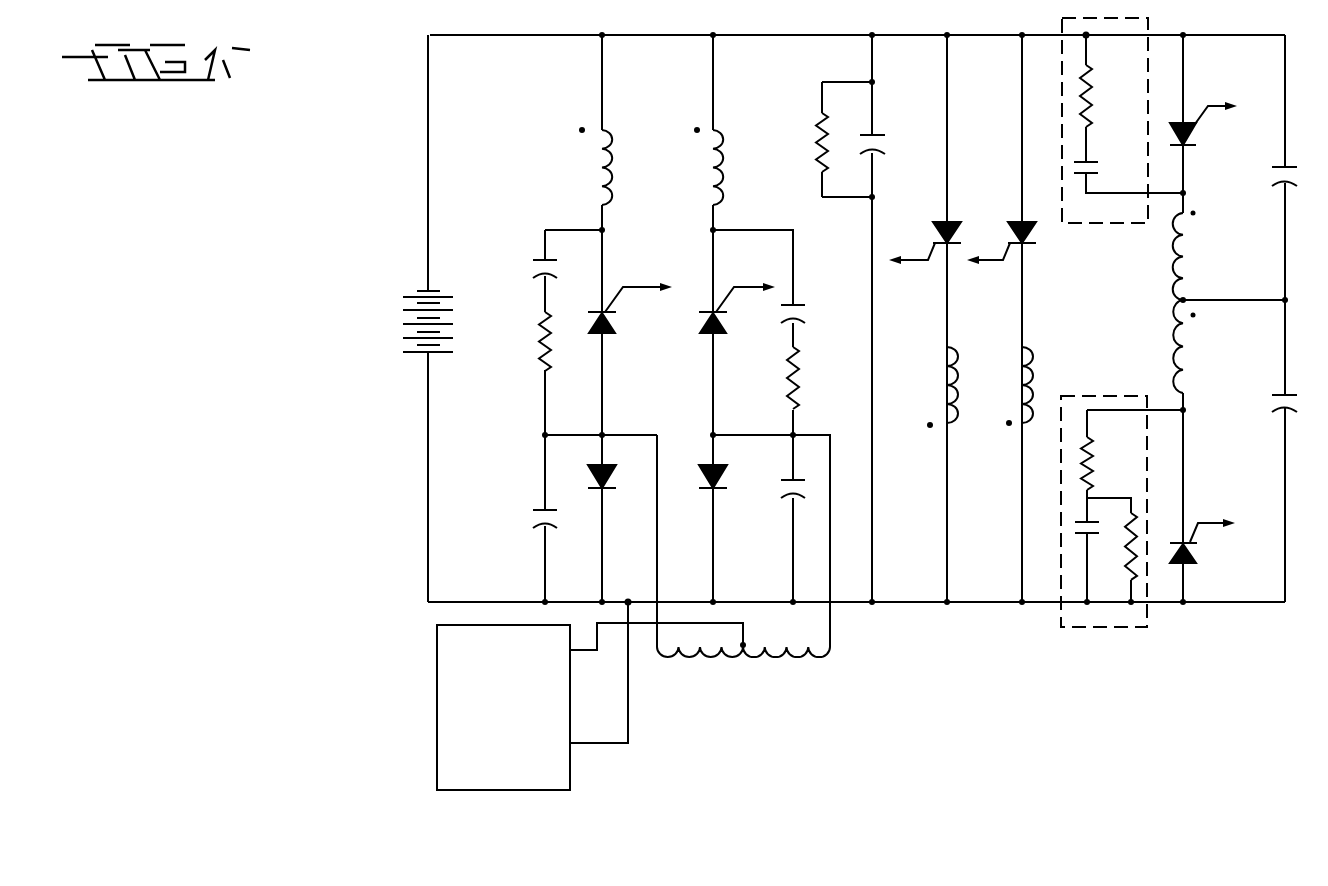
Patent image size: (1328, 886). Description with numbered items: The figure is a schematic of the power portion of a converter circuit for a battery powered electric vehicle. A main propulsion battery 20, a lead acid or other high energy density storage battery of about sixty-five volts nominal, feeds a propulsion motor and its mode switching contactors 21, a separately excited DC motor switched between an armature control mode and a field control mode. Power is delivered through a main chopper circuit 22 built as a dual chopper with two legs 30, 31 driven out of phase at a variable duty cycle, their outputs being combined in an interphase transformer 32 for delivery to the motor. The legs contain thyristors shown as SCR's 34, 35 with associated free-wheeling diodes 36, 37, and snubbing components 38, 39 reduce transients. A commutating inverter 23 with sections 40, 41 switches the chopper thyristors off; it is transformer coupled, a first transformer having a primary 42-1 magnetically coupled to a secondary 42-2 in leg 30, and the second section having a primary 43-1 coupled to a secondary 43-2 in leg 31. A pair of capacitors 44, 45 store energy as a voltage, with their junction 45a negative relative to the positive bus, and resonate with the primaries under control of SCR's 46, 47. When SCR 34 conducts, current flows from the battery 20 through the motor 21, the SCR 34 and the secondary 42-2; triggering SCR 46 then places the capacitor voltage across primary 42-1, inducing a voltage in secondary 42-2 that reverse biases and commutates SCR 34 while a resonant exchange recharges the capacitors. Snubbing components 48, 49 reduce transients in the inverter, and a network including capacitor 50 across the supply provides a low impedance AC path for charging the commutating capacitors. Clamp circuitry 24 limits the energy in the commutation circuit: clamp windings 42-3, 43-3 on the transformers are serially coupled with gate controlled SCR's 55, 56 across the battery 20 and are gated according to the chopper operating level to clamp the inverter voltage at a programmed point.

The main propulsion battery 20 is at (400, 336).
The propulsion motor and switching components 21 is at (437, 681).
The main chopper circuit 22 is at (649, 247).
The commutating inverter 23 is at (1122, 300).
The clamp circuitry 24 is at (998, 394).
The chopper leg 30 is at (571, 401).
The chopper leg 31 is at (748, 390).
The interphase transformer 32 is at (780, 697).
The SCR 34 is at (612, 321).
The SCR 35 is at (703, 340).
The free-wheeling diode 36 is at (628, 466).
The free-wheeling diode 37 is at (722, 472).
The snubbing components 38 is at (545, 282).
The snubbing components 39 is at (813, 317).
The commutating inverter section 40 is at (1238, 490).
The commutating inverter section 41 is at (1232, 210).
The transformer primary 42-1 is at (1190, 357).
The transformer secondary 42-2 is at (618, 140).
The clamp winding 42-3 is at (1038, 352).
The transformer primary 43-1 is at (1195, 247).
The transformer secondary 43-2 is at (730, 147).
The clamp winding 43-3 is at (974, 404).
The capacitor 44 is at (1270, 402).
The capacitor 45 is at (1272, 168).
The junction 45a is at (1282, 306).
The SCR 46 is at (1190, 557).
The SCR 47 is at (1195, 130).
The snubbing components 48 is at (1061, 582).
The snubbing components 49 is at (1062, 100).
The capacitor 50 is at (882, 135).
The SCR 55 is at (1020, 218).
The SCR 56 is at (943, 218).